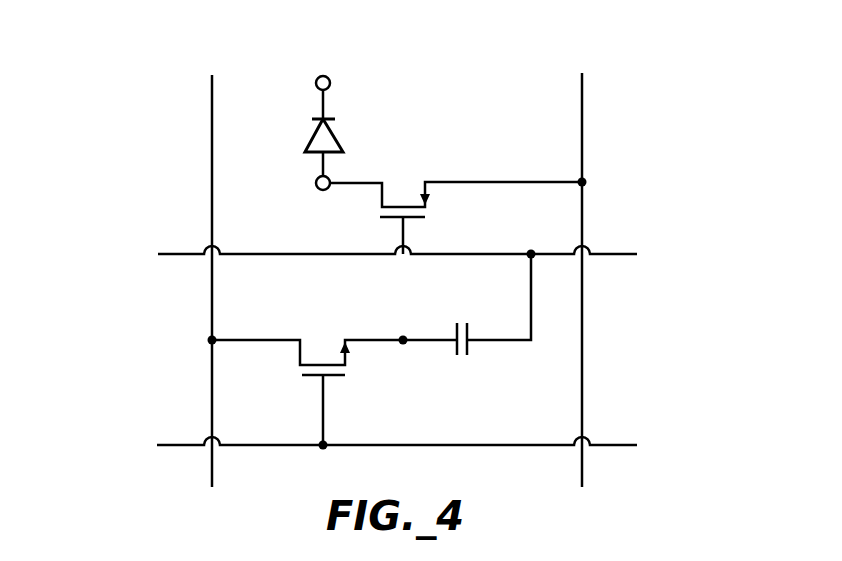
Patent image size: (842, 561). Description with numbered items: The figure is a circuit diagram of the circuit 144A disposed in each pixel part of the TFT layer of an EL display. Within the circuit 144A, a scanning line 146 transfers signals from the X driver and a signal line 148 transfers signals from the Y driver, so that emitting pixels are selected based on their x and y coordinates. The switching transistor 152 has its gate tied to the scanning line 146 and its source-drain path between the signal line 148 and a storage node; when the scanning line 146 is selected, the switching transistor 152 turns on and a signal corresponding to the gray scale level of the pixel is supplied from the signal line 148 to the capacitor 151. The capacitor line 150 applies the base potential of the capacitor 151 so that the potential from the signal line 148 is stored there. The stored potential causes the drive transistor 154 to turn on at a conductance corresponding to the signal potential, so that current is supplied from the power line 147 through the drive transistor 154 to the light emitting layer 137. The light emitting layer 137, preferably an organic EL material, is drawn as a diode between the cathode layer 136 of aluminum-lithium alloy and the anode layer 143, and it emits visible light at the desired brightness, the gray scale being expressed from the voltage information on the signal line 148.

The cathode layer 136 is at (327, 75).
The light emitting layer 137 is at (340, 138).
The anode layer 143 is at (316, 182).
The circuit 144A is at (657, 112).
The scanning line 146 is at (473, 447).
The power line 147 is at (583, 127).
The signal line 148 is at (211, 184).
The capacitor line 150 is at (605, 253).
The capacitor 151 is at (490, 300).
The switching transistor 152 is at (349, 368).
The drive transistor 154 is at (403, 201).